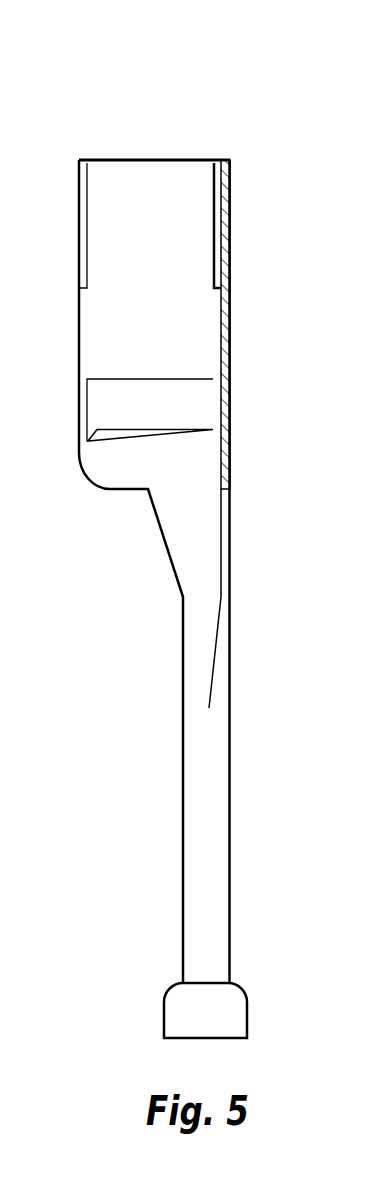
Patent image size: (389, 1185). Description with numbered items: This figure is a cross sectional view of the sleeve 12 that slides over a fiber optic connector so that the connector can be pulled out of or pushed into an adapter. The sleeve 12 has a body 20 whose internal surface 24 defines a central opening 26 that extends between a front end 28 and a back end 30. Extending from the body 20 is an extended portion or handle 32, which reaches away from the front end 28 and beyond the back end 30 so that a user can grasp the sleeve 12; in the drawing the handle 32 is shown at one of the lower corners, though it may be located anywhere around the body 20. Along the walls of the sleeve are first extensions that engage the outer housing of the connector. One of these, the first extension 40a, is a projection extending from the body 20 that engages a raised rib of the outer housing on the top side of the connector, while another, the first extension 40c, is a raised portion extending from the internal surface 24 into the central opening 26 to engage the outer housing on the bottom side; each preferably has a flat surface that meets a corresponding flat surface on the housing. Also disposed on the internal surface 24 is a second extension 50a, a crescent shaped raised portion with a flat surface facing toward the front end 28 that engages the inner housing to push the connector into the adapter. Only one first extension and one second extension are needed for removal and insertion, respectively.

The sleeve 12 is at (168, 106).
The internal surface 24 is at (100, 175).
The central opening 26 is at (148, 188).
The front end 28 is at (185, 160).
The first extension 40a is at (79, 241).
The first extension 40c is at (217, 227).
The body 20 is at (79, 406).
The second extension 50a is at (207, 397).
The back end 30 is at (123, 490).
The handle 32 is at (183, 882).